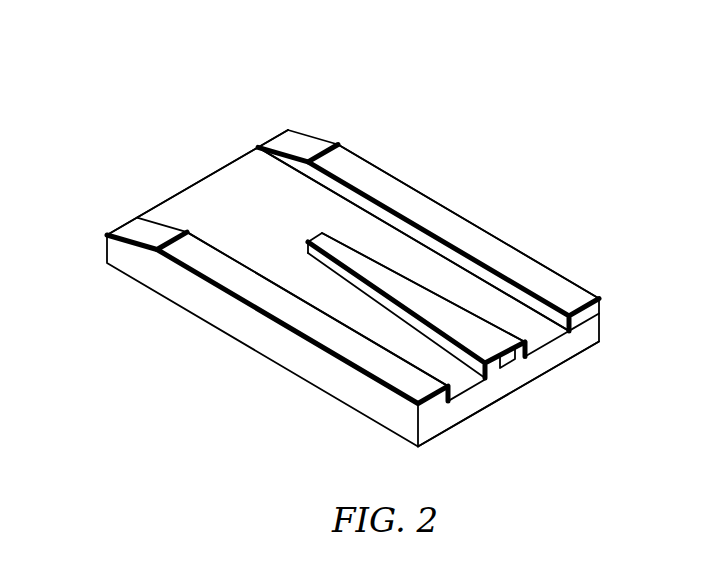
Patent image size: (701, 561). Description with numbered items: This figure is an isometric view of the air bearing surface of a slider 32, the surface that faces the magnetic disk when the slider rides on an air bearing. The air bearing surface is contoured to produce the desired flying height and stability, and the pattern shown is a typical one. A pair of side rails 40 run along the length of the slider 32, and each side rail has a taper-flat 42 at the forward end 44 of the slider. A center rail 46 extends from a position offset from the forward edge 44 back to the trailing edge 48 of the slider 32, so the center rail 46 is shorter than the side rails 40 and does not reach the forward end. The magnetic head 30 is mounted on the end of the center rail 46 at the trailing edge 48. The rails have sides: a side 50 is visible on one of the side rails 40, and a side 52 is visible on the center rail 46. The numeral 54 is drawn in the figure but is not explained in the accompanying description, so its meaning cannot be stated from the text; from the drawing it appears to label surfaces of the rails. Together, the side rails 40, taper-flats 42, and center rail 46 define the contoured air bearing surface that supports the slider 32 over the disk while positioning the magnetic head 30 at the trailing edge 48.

The magnetic head 30 is at (510, 366).
The slider 32 is at (504, 126).
The side rails 40 is at (408, 203).
The taper-flats 42 is at (290, 133).
The forward end 44 is at (208, 176).
The center rail 46 is at (440, 303).
The trailing edge 48 is at (473, 398).
The side of side rail 50 is at (347, 192).
The side of center rail 52 is at (385, 292).
The rail top surfaces 54 is at (553, 270).